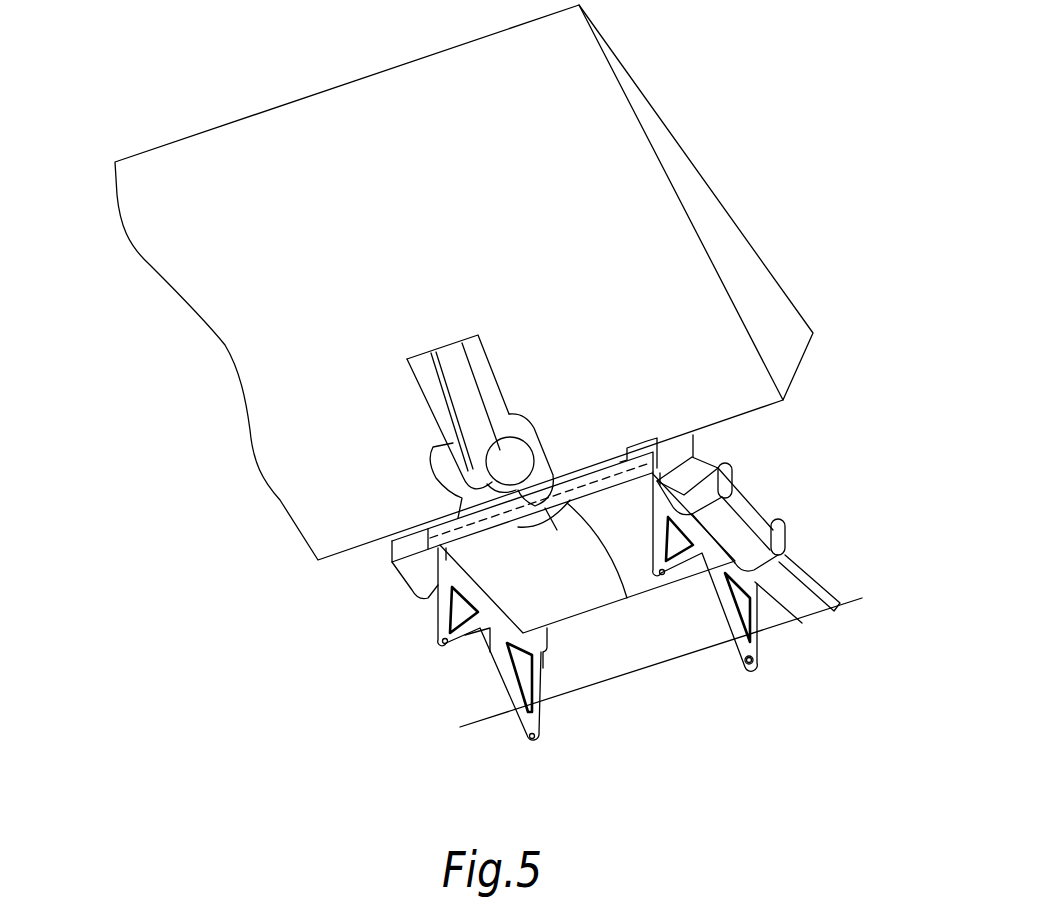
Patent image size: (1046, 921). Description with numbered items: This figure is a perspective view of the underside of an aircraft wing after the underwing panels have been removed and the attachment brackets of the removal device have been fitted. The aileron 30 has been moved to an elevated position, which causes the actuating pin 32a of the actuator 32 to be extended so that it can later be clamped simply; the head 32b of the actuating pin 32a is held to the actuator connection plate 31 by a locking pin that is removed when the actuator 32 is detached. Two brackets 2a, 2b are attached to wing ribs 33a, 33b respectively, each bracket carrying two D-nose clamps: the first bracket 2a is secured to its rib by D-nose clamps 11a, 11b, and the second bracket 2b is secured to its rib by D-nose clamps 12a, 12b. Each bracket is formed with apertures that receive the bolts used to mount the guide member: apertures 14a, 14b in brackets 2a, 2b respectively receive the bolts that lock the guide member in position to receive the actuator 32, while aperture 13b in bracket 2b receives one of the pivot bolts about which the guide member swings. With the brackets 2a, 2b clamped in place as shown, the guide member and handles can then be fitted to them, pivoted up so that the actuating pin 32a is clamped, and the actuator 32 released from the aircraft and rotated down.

The aileron 30 is at (700, 205).
The actuator connection plate 31 is at (484, 384).
The actuator 32 is at (480, 556).
The actuating pin 32a is at (533, 500).
The head 32b is at (487, 479).
The D-nose clamp 11a is at (422, 592).
The D-nose clamp 11b is at (470, 654).
The bracket 2a is at (439, 618).
The bracket 2b is at (752, 627).
The aperture 14a is at (444, 648).
The aperture 14b is at (668, 578).
The wing rib 33a is at (545, 690).
The wing rib 33b is at (738, 531).
The D-nose clamp 12a is at (724, 481).
The D-nose clamp 12b is at (786, 537).
The aperture 13b is at (752, 663).